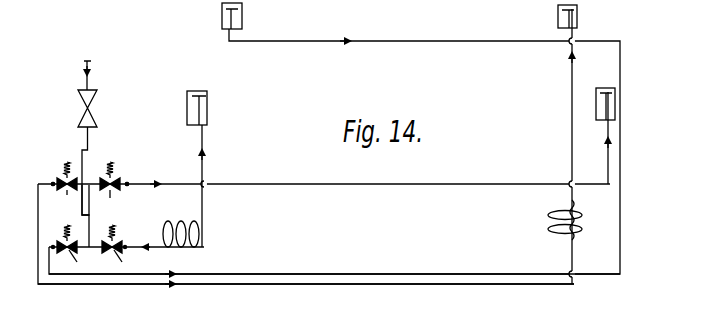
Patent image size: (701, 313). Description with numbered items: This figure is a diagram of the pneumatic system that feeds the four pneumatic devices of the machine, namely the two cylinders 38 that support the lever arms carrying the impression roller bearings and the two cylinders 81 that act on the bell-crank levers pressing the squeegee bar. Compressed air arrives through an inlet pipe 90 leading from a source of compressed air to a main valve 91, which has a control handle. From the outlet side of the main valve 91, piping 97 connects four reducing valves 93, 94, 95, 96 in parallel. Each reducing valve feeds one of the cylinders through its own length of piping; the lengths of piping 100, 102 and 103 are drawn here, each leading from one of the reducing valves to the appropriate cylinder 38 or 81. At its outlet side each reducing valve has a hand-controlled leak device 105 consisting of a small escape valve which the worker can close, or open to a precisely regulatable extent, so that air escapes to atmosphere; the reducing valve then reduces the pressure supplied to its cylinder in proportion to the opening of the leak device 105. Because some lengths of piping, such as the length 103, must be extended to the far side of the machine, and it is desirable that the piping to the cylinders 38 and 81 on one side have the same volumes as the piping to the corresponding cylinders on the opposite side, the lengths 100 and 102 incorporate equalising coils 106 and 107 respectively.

The cylinder 38 is at (187, 100).
The cylinder 81 is at (222, 22).
The inlet pipe 90 is at (88, 63).
The main valve 91 is at (97, 108).
The reducing valve 93 is at (122, 248).
The reducing valve 94 is at (110, 163).
The reducing valve 95 is at (77, 248).
The reducing valve 96 is at (67, 163).
The piping 97 is at (80, 204).
The length of piping 100 is at (205, 238).
The length of piping 102 is at (279, 273).
The length of piping 103 is at (330, 284).
The hand-controlled leak device 105 is at (53, 181).
The equalising coil 106 is at (206, 208).
The equalising coil 107 is at (560, 218).